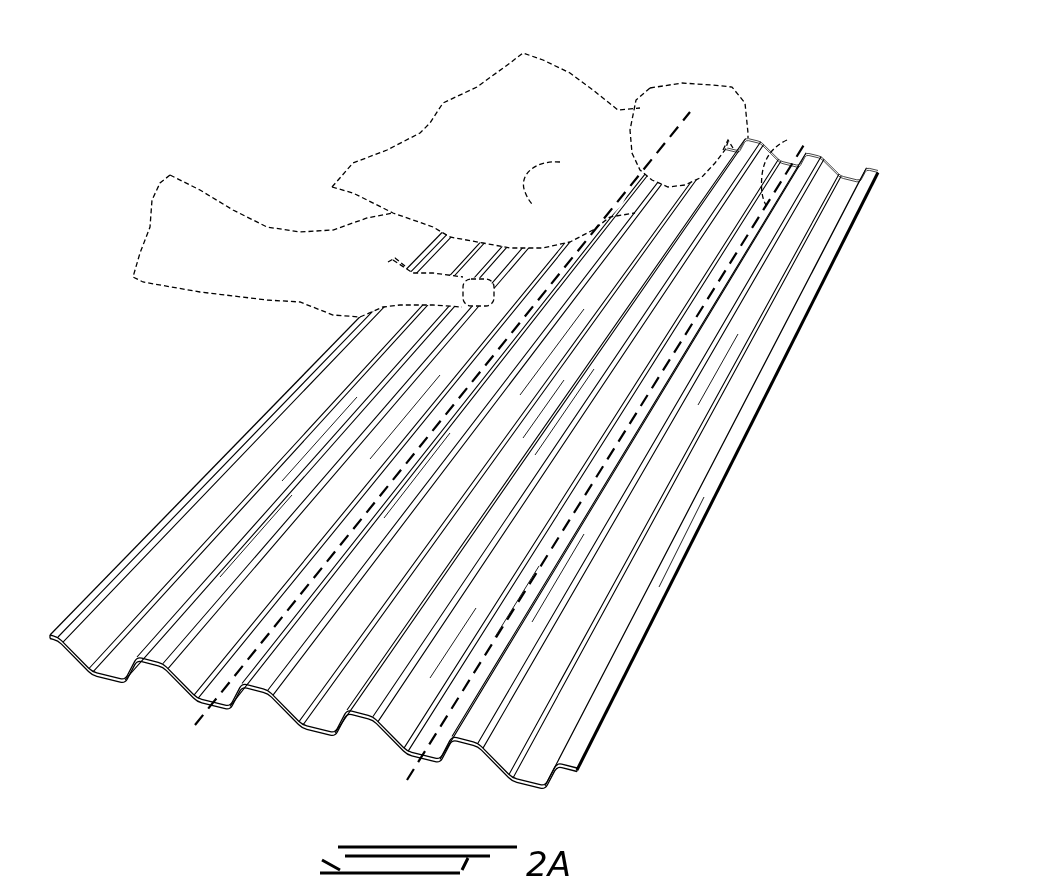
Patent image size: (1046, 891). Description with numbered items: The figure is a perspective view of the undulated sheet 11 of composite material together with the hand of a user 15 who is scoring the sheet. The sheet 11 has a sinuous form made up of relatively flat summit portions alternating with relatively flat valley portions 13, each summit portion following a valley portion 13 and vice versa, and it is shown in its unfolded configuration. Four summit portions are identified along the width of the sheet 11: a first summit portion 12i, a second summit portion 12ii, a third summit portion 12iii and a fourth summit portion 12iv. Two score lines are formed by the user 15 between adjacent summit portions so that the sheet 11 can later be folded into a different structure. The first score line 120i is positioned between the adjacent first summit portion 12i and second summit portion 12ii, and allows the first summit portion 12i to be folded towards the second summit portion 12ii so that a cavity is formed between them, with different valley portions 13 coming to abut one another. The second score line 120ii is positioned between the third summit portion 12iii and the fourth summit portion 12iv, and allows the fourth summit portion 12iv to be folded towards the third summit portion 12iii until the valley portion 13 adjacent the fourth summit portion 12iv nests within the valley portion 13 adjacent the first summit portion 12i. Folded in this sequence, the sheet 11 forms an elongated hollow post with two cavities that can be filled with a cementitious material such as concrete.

The sheet 11 is at (464, 438).
The first summit portion 12i is at (507, 678).
The second summit portion 12ii is at (375, 700).
The third summit portion 12iii is at (270, 677).
The fourth summit portion 12iv is at (163, 650).
The valley portions 13 is at (533, 772).
The user 15 is at (475, 182).
The first score line 120i is at (781, 140).
The second score line 120ii is at (648, 88).